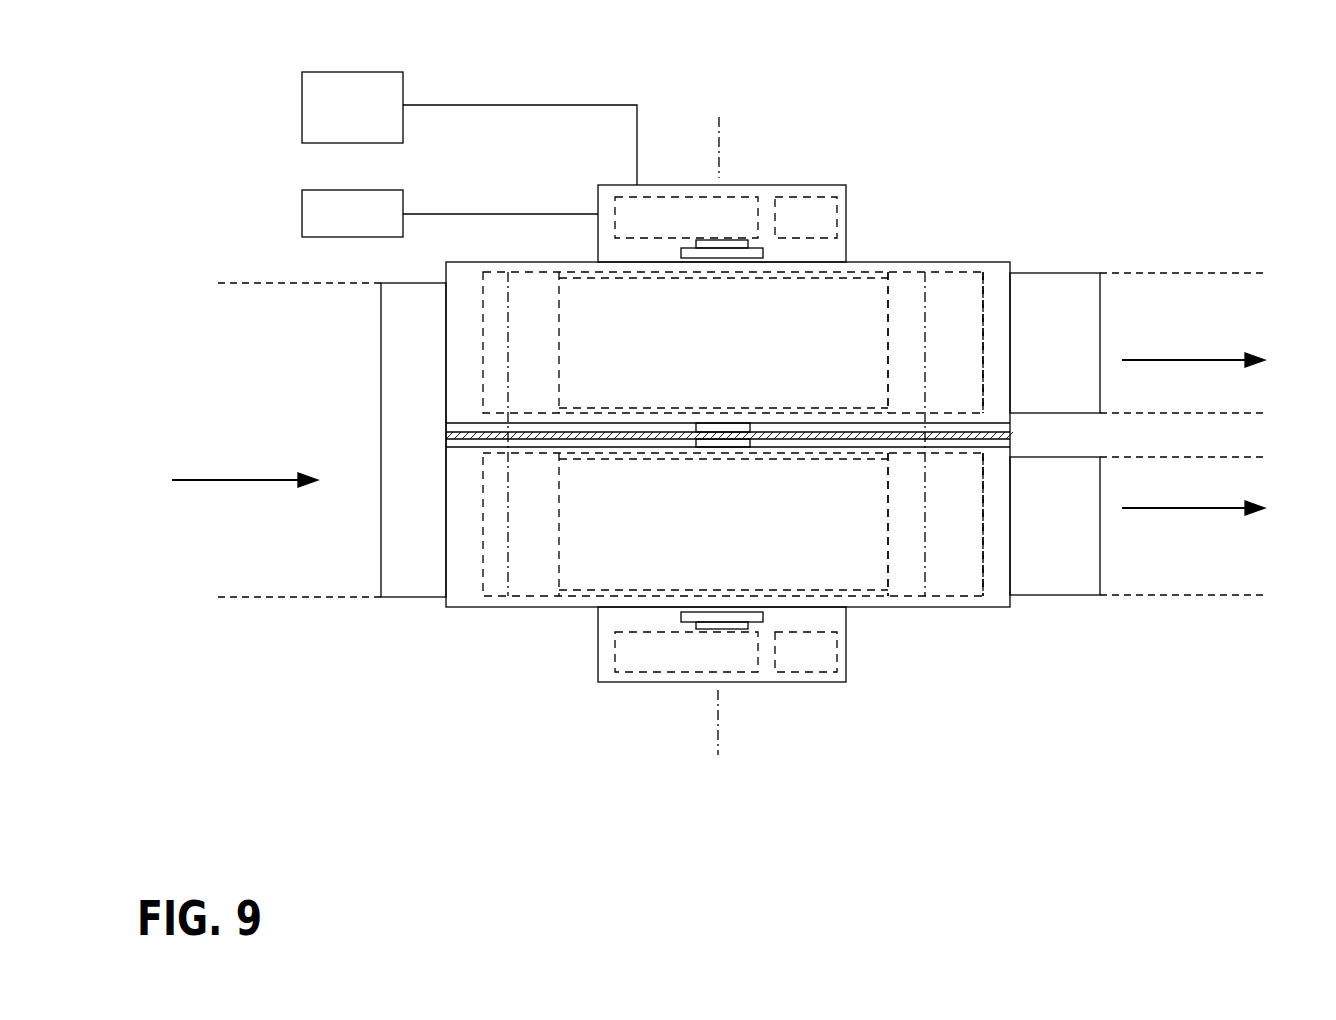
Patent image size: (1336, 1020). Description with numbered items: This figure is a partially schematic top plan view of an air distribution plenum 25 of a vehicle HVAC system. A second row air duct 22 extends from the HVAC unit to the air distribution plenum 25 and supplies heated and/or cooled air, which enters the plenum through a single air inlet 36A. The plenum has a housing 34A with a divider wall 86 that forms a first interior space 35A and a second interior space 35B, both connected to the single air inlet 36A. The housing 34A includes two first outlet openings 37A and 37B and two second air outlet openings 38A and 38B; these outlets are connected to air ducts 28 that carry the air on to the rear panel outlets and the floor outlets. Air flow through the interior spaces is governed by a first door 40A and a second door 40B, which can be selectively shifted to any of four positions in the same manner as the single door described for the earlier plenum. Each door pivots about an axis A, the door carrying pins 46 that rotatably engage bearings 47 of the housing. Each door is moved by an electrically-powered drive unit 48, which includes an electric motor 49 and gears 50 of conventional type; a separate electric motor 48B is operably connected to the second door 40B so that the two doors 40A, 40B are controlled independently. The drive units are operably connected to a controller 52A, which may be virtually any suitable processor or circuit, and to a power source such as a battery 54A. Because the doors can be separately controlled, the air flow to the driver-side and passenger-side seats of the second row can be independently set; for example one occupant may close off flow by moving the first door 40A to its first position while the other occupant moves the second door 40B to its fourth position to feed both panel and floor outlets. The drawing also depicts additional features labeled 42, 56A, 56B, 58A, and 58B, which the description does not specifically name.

The second row air duct 22 is at (255, 283).
The air distribution plenum 25 is at (907, 260).
The ducts 28 is at (1165, 273).
The housing 34A is at (466, 262).
The first interior space 35A is at (607, 325).
The second interior space 35B is at (602, 565).
The air inlet 36A is at (381, 516).
The first outlet opening 37A is at (888, 318).
The first outlet opening 37B is at (890, 548).
The second air outlet opening 38A is at (1075, 307).
The second air outlet opening 38B is at (1075, 512).
The first door 40A is at (993, 284).
The second door 40B is at (993, 538).
The inlet flow 42 is at (202, 480).
The pins 46 is at (740, 245).
The bearings 47 is at (686, 250).
The electrically-powered drive unit 48 is at (848, 225).
The electric motor 48B is at (755, 683).
The electric motor 49 is at (815, 205).
The gears 50 is at (735, 205).
The controller 52A is at (347, 82).
The battery 54A is at (308, 218).
The first chamber 56A is at (483, 320).
The second chamber 56B is at (483, 523).
The first outlet passage 58A is at (983, 332).
The second outlet passage 58B is at (983, 490).
The divider wall 86 is at (475, 432).
The axis A is at (720, 132).